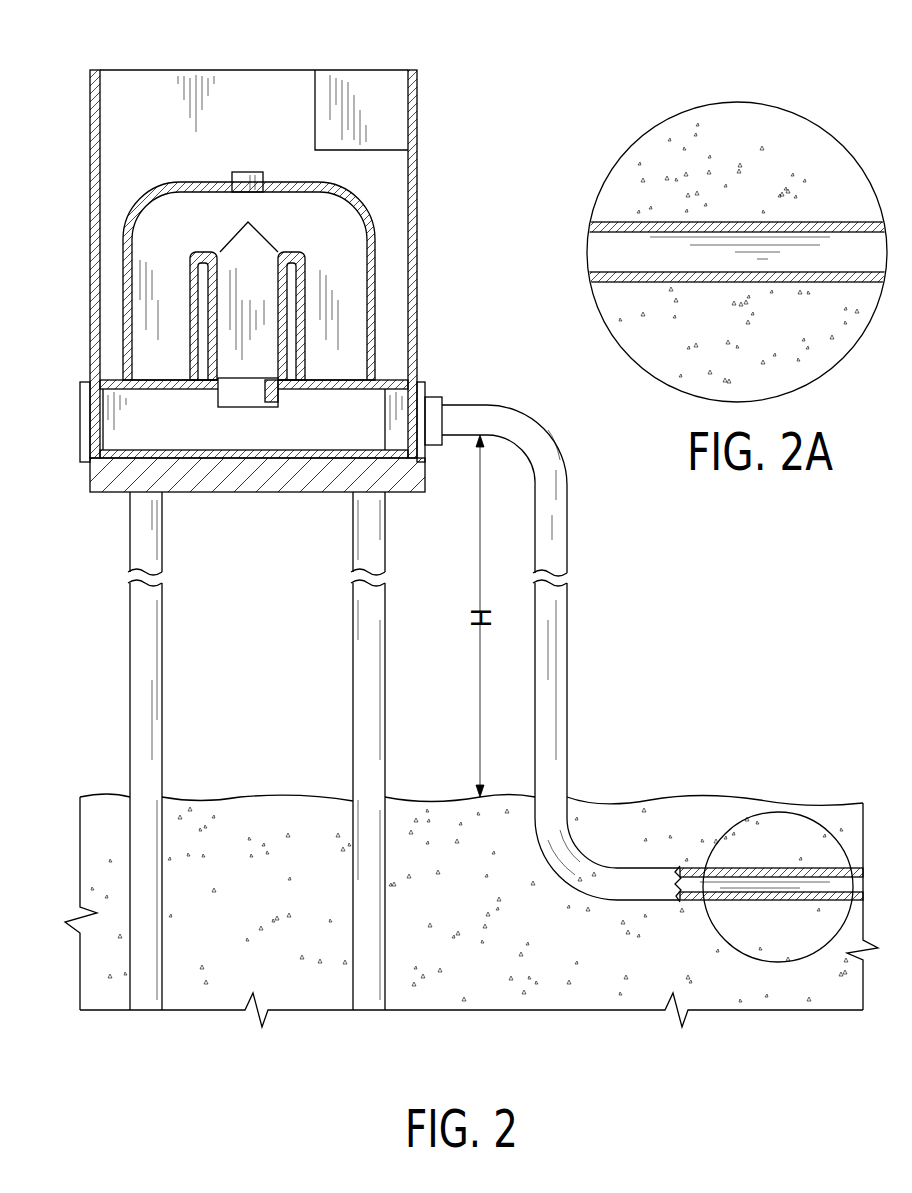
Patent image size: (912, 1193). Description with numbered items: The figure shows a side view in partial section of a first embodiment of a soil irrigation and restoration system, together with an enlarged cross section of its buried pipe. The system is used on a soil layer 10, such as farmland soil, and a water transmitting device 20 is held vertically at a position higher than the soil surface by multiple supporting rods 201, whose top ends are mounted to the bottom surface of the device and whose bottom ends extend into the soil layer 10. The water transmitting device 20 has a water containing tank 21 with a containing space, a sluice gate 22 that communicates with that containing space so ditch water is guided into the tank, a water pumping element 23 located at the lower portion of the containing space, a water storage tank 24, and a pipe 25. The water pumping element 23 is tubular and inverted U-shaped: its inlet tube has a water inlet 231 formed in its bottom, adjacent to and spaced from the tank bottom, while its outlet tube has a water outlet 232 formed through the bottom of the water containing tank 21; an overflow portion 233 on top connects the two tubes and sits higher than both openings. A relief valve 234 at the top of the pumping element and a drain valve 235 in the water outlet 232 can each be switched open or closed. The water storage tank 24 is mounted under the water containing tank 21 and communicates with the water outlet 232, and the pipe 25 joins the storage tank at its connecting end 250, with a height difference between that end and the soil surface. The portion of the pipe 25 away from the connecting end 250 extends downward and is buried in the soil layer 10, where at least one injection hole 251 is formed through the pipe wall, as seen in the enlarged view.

In FIG. 2, the soil layer 10 is at (485, 975).
In FIG. 2, the water transmitting device 20 is at (86, 159).
In FIG. 2, the water containing tank 21 is at (284, 128).
In FIG. 2, the sluice gate 22 is at (367, 105).
In FIG. 2, the water pumping element 23 is at (386, 276).
In FIG. 2, the water inlet 231 is at (366, 372).
In FIG. 2, the water outlet 232 is at (263, 395).
In FIG. 2, the overflow portion 233 is at (292, 253).
In FIG. 2, the relief valve 234 is at (250, 186).
In FIG. 2, the drain valve 235 is at (236, 400).
In FIG. 2, the water storage tank 24 is at (118, 450).
In FIG. 2, the pipe 25 is at (580, 698).
In FIG. 2, the connecting end 250 is at (452, 408).
In FIG. 2, the supporting rods 201 is at (147, 668).
In FIG. 2A, the injection hole 251 is at (850, 222).